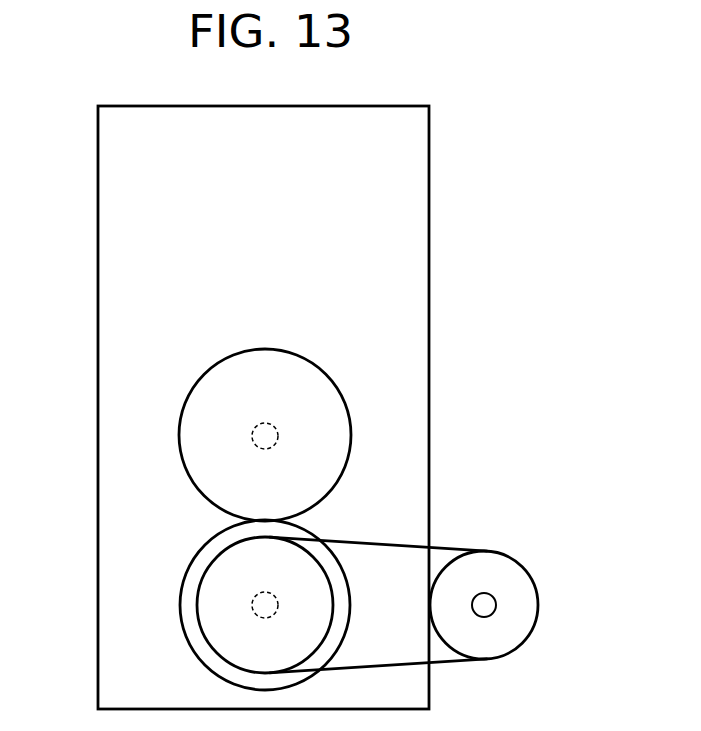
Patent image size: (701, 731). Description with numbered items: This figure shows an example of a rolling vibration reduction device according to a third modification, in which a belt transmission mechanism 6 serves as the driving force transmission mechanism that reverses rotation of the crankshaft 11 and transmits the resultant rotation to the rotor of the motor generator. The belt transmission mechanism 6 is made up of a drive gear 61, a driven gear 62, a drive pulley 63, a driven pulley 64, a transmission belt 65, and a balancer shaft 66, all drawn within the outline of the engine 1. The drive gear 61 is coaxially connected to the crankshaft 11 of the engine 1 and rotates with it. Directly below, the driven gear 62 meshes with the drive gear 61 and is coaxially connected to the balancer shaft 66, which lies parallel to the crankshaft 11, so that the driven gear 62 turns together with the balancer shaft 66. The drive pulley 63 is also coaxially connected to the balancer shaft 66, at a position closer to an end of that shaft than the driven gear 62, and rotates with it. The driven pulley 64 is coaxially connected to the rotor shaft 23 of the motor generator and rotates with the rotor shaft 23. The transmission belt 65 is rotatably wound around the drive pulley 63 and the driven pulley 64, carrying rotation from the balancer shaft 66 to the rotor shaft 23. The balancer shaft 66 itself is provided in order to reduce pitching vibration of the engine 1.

The engine 1 is at (378, 106).
The belt transmission mechanism 6 is at (377, 442).
The crankshaft 11 is at (253, 431).
The rotor shaft 23 is at (496, 603).
The drive gear 61 is at (195, 388).
The driven gear 62 is at (190, 563).
The drive pulley 63 is at (198, 606).
The driven pulley 64 is at (525, 562).
The transmission belt 65 is at (390, 539).
The balancer shaft 66 is at (268, 618).